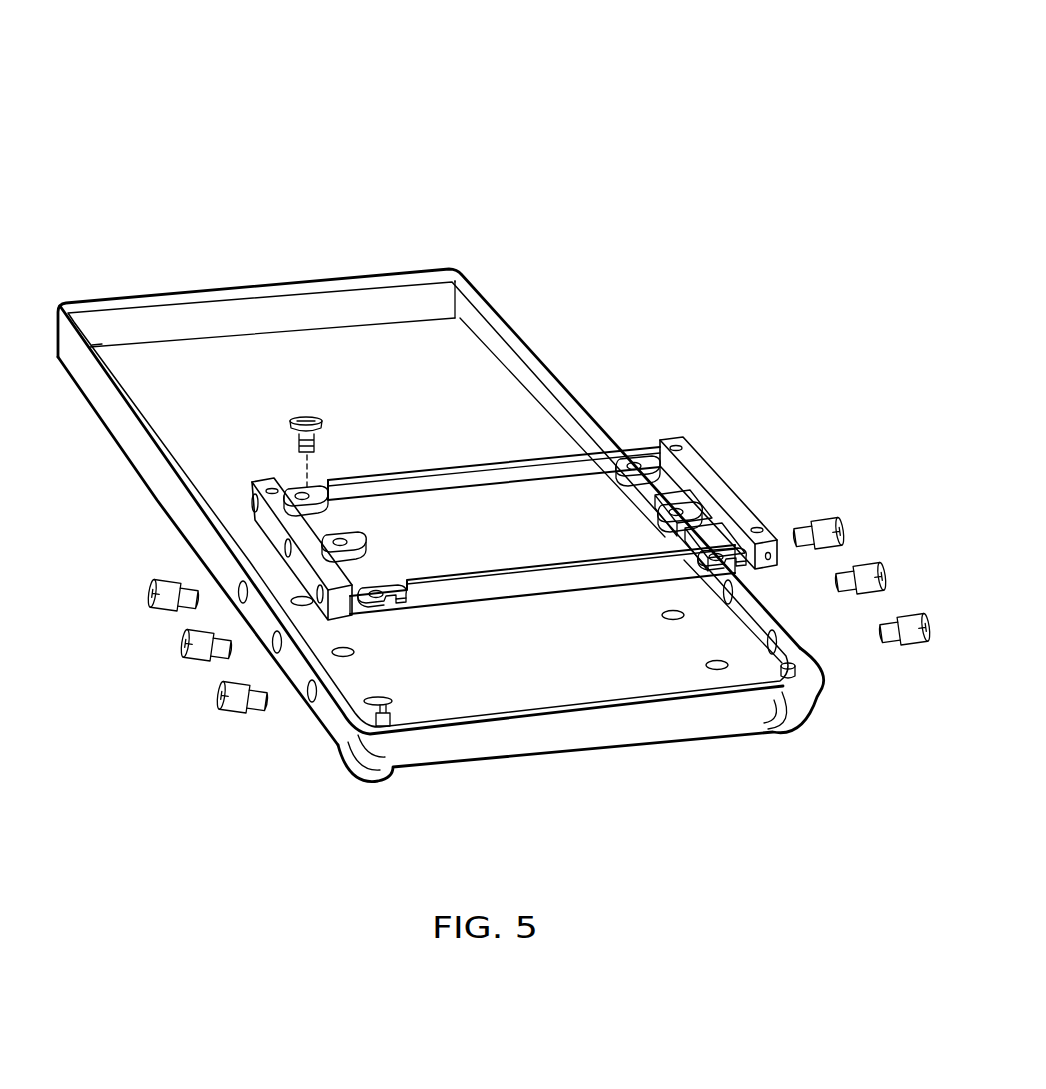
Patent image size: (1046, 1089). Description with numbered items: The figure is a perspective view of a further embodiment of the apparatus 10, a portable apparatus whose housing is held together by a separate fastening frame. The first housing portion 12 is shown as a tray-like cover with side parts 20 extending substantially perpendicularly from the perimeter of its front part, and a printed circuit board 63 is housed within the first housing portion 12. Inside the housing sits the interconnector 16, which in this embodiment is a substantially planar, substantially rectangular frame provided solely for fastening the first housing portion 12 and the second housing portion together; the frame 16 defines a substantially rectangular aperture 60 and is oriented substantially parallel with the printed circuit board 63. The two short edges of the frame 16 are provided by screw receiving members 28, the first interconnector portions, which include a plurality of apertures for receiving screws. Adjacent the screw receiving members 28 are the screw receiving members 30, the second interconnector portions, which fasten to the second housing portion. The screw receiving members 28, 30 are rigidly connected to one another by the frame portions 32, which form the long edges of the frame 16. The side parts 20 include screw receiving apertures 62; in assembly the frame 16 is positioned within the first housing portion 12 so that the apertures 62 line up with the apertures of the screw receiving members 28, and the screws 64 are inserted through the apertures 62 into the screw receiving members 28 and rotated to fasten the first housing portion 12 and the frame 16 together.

The apparatus 10 is at (647, 95).
The first housing portion 12 is at (483, 757).
The interconnector 16 is at (517, 601).
The side parts 20 is at (257, 303).
The screw receiving members 28 is at (273, 524).
The screw receiving members 30 is at (636, 452).
The frame portions 32 is at (425, 480).
The aperture 60 is at (469, 549).
The screw receiving apertures 62 is at (238, 586).
The printed circuit board 63 is at (406, 369).
The screws 64 is at (222, 699).